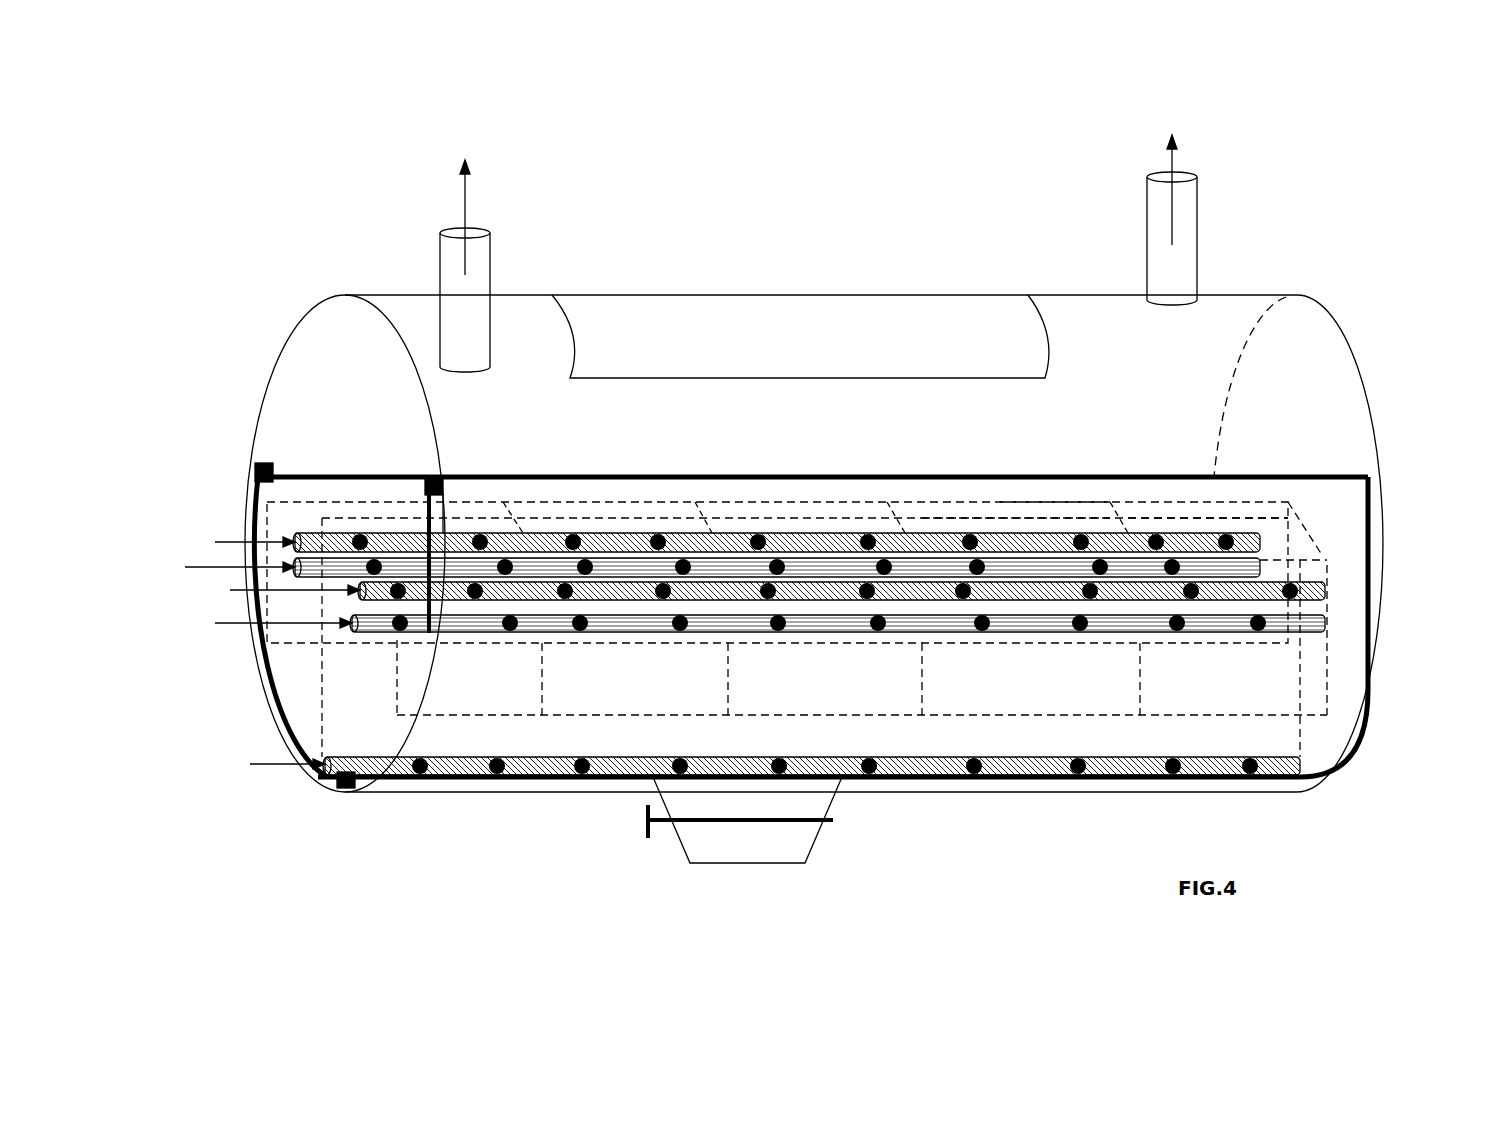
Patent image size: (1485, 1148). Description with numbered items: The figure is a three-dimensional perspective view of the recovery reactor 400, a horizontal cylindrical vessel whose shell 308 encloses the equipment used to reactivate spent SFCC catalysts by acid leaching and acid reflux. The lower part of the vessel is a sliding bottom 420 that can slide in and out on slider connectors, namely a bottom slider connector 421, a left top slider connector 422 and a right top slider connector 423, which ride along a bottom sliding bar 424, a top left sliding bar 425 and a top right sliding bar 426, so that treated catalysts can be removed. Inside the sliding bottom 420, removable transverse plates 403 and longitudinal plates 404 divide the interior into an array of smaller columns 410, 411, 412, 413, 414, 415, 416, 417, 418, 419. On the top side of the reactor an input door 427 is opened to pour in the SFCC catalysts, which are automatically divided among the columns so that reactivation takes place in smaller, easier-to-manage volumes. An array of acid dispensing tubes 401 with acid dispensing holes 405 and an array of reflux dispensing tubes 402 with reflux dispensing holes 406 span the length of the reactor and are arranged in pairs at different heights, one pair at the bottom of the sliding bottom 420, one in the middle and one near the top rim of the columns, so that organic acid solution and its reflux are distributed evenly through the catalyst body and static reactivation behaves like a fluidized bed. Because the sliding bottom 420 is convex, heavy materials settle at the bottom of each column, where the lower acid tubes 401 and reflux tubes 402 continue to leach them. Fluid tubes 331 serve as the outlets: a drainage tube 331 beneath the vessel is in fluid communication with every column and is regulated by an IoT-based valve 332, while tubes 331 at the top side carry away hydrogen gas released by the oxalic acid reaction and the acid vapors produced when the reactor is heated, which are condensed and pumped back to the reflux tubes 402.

The recovery reactor 400 is at (1032, 191).
The vessel shell 308 is at (1368, 403).
The drainage tube 331 is at (490, 245).
The IoT-based valve 332 is at (660, 826).
The array of acid dispensing tubes 401 is at (692, 535).
The array of reflux dispensing tubes 402 is at (325, 757).
The transverse plates 403 is at (540, 668).
The longitudinal plates 404 is at (468, 528).
The acid dispensing holes 405 is at (557, 532).
The reflux dispensing holes 406 is at (960, 632).
The column 410 is at (298, 517).
The column 411 is at (360, 663).
The column 412 is at (595, 512).
The column 413 is at (635, 530).
The column 414 is at (788, 513).
The column 415 is at (843, 530).
The column 416 is at (985, 512).
The column 417 is at (1040, 530).
The column 418 is at (1152, 530).
The column 419 is at (1272, 530).
The sliding bottom 420 is at (1347, 523).
The bottom slider connector 421 is at (340, 790).
The left top slider connector 422 is at (258, 466).
The right top slider connector 423 is at (428, 478).
The bottom sliding bar 424 is at (1030, 777).
The top left sliding bar 425 is at (925, 478).
The top right sliding bar 426 is at (1328, 477).
The input door 427 is at (820, 295).